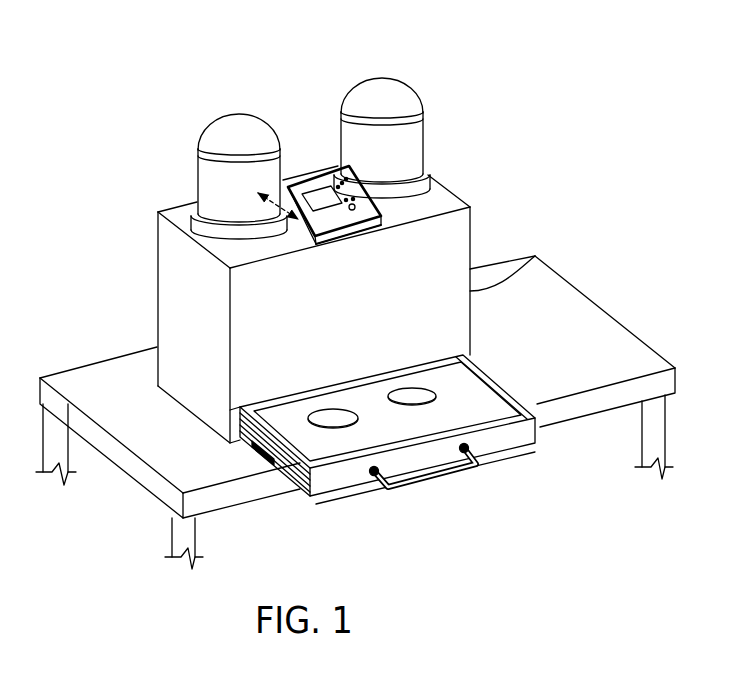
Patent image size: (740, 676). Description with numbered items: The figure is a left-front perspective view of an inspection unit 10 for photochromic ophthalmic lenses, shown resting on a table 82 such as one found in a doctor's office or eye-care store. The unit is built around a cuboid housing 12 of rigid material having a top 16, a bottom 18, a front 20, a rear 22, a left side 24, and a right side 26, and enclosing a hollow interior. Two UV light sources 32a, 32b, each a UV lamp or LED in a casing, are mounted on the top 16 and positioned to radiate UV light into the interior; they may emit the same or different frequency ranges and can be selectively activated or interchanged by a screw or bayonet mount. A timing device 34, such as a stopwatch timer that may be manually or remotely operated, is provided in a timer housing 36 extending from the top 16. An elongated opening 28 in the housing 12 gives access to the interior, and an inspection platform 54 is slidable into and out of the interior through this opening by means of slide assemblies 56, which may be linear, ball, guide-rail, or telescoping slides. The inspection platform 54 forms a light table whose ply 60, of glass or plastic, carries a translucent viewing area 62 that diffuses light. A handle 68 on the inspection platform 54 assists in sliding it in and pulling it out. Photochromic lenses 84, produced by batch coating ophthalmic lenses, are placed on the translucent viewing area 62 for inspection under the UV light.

The inspection unit 10 is at (359, 412).
The housing 12 is at (302, 295).
The top 16 is at (446, 197).
The bottom 18 is at (202, 435).
The front 20 is at (374, 308).
The rear 22 is at (165, 191).
The left side 24 is at (176, 268).
The right side 26 is at (538, 257).
The elongated opening 28 is at (408, 444).
The UV light source 32a is at (237, 130).
The UV light source 32b is at (385, 92).
The timing device 34 is at (343, 186).
The timer housing 36 is at (355, 216).
The inspection platform 54 is at (508, 417).
The slide assemblies 56 is at (251, 446).
The ply 60 is at (334, 456).
The translucent viewing area 62 is at (468, 397).
The handle 68 is at (459, 472).
The table 82 is at (83, 383).
The photochromic lens 84 is at (410, 399).